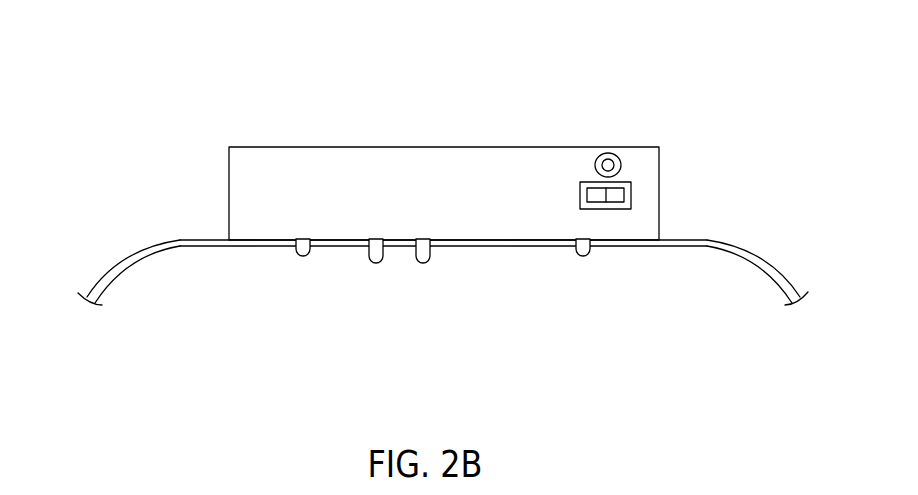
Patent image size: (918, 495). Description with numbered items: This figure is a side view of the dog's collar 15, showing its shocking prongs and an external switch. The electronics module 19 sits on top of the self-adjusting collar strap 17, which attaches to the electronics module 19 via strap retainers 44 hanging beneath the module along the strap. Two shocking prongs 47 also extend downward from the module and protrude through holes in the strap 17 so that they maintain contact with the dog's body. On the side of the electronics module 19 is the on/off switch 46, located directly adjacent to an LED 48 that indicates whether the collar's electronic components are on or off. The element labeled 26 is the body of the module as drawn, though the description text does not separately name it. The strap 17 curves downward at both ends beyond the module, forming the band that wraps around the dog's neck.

The dog's collar 15 is at (670, 103).
The self-adjusting collar strap 17 is at (775, 272).
The electronics module 19 is at (515, 94).
The housing 26 is at (417, 158).
The strap retainers 44 is at (303, 256).
The on/off switch 46 is at (632, 192).
The shocking prongs 47 is at (376, 263).
The LED 48 is at (608, 153).